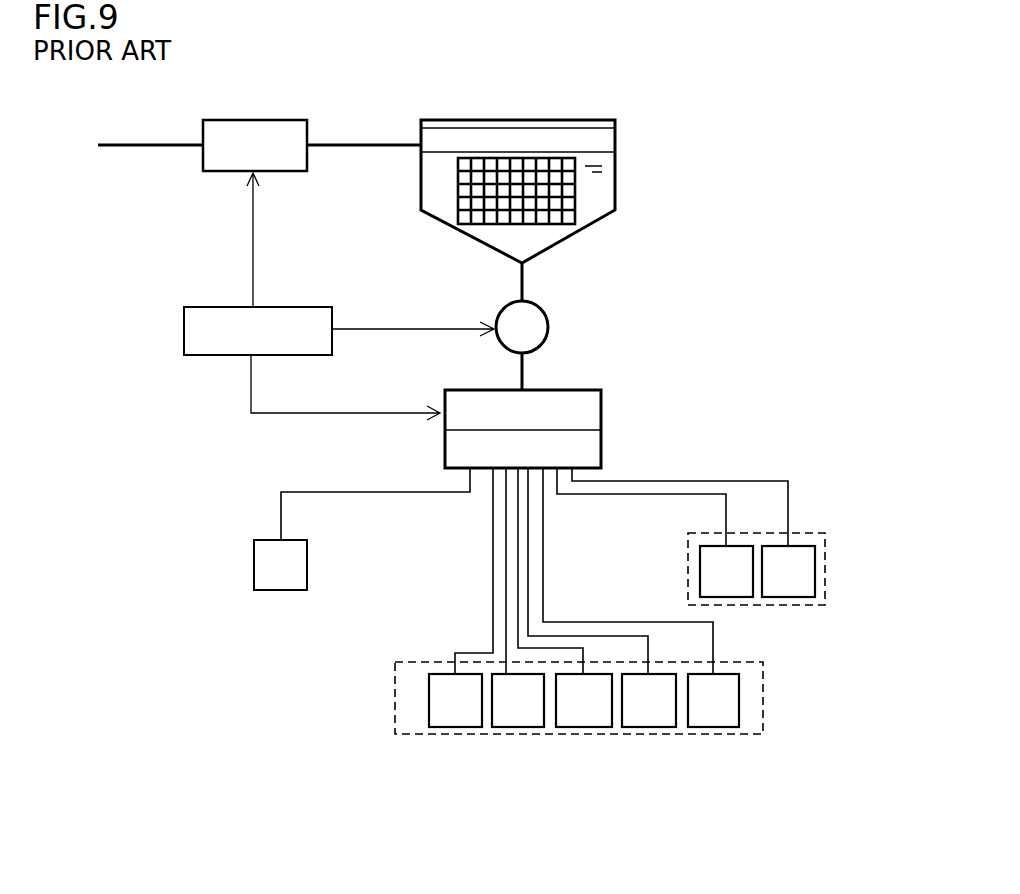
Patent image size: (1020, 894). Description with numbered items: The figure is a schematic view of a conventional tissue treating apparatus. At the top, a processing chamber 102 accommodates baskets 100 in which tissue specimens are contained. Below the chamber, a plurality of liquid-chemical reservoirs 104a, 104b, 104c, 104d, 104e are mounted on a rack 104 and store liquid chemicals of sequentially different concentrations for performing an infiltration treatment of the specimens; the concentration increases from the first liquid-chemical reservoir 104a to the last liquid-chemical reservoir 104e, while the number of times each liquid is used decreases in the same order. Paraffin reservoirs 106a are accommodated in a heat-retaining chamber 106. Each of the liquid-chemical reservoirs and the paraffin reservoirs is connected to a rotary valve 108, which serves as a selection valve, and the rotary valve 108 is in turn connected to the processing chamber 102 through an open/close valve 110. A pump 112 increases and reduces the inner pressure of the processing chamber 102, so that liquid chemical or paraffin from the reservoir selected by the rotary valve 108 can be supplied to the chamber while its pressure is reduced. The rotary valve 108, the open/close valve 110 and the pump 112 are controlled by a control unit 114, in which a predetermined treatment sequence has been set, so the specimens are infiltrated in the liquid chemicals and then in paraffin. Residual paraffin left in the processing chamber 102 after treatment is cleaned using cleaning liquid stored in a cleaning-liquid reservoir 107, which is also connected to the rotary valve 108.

The basket 100 is at (556, 195).
The processing chamber 102 is at (617, 140).
The rack 104 is at (395, 686).
The liquid-chemical reservoir 104a is at (455, 716).
The liquid-chemical reservoir 104b is at (524, 708).
The liquid-chemical reservoir 104c is at (586, 714).
The liquid-chemical reservoir 104d is at (648, 716).
The liquid-chemical reservoir 104e is at (717, 703).
The heat-retaining chamber 106 is at (800, 533).
The paraffin reservoir 106a is at (718, 571).
The cleaning-liquid reservoir 107 is at (273, 566).
The rotary valve 108 is at (634, 426).
The open/close valve 110 is at (549, 324).
The pump 112 is at (202, 164).
The control unit 114 is at (184, 350).